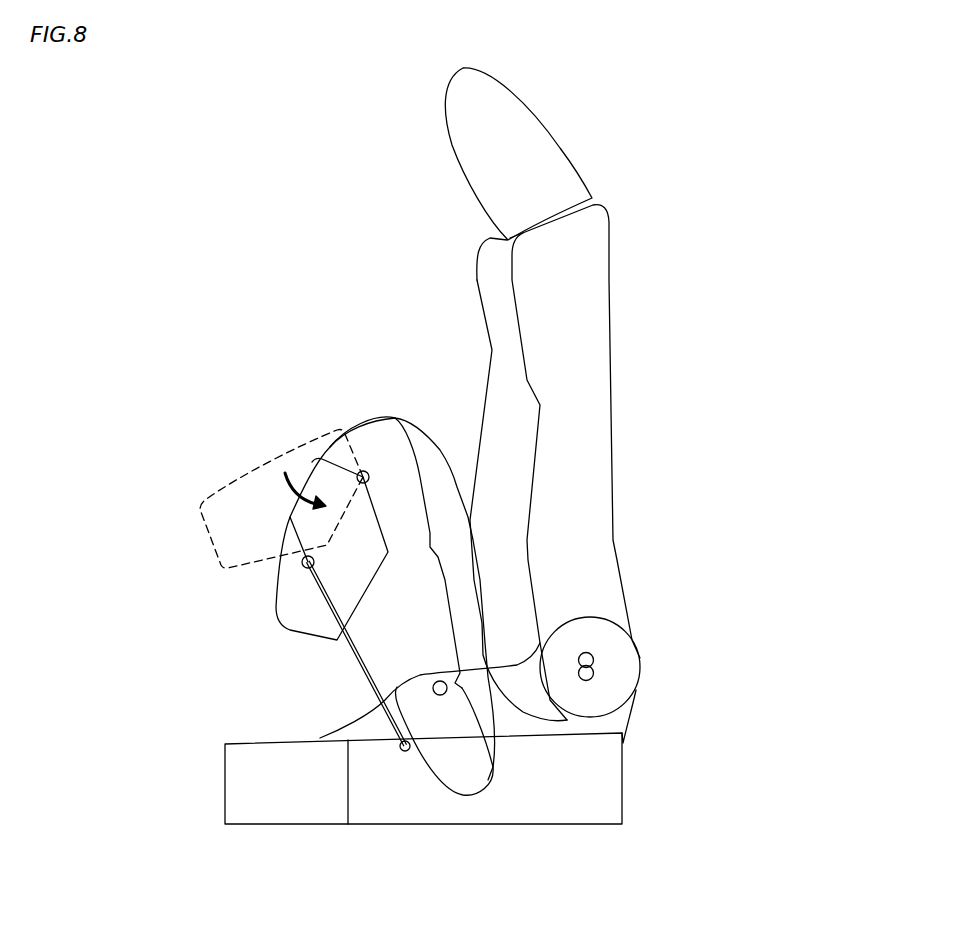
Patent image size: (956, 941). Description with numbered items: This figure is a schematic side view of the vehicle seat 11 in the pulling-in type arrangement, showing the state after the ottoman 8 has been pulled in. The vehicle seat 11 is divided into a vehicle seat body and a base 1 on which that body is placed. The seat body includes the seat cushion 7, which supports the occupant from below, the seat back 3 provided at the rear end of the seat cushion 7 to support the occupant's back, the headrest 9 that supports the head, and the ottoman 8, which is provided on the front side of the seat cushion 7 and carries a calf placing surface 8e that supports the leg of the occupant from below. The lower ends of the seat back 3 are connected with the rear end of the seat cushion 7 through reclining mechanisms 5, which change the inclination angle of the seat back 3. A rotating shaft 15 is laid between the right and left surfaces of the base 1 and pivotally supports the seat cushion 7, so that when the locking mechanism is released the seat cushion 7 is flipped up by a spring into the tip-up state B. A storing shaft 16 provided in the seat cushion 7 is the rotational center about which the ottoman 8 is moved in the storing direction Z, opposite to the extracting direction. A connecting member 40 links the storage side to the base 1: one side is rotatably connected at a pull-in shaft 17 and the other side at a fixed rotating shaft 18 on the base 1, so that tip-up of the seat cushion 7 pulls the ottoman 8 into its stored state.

The base 1 is at (628, 797).
The seat back 3 is at (587, 292).
The reclining mechanism 5 is at (617, 667).
The seat cushion 7 is at (477, 773).
The ottoman 8 is at (290, 593).
The calf placing surface 8e is at (247, 470).
The headrest 9 is at (537, 160).
The vehicle seat 11 is at (511, 394).
The rotating shaft 15 is at (442, 695).
The storing shaft 16 is at (365, 470).
The pull-in shaft 17 is at (303, 563).
The fixed rotating shaft 18 is at (405, 752).
The connecting member 40 is at (373, 688).
The tip-up state B is at (442, 447).
The storing direction Z is at (300, 487).